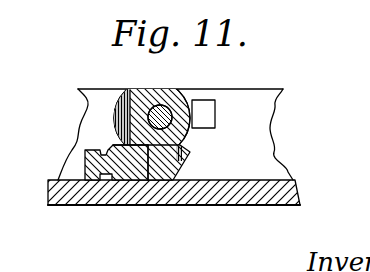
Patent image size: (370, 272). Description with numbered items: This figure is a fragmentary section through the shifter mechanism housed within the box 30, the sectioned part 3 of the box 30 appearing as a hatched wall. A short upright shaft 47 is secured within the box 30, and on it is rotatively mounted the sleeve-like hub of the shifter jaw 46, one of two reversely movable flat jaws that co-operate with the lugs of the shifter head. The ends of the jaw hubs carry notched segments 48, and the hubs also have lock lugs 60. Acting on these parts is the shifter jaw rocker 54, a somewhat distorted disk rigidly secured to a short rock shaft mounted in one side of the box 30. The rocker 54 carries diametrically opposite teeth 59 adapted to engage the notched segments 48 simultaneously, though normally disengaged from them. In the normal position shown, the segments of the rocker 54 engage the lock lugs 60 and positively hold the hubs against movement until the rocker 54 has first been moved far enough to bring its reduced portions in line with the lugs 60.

The box 30 is at (271, 125).
The upright shaft 47 is at (157, 113).
The shifter jaw 46 is at (164, 109).
The block 3 is at (241, 75).
The notched segments 48 is at (114, 129).
The teeth 59 is at (84, 166).
The shifter jaw rocker 54 is at (148, 160).
The lock lugs 60 is at (137, 147).